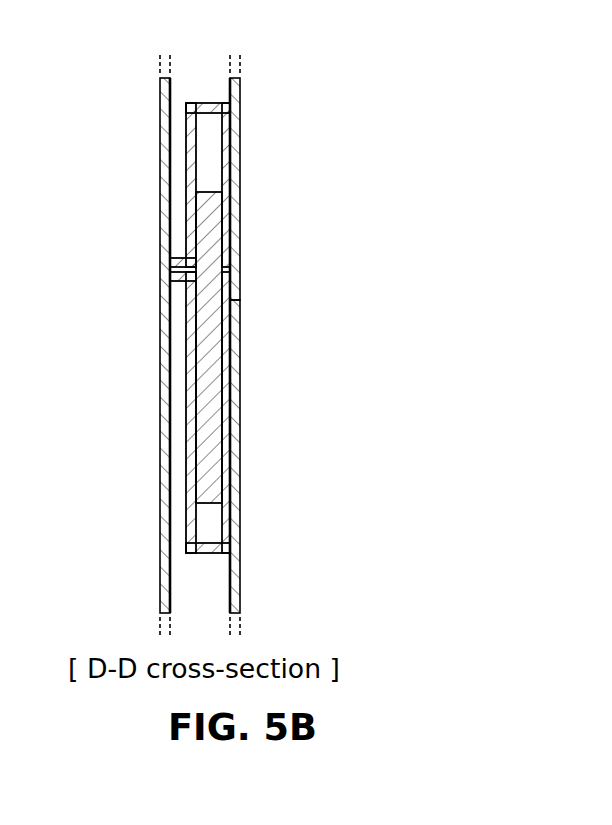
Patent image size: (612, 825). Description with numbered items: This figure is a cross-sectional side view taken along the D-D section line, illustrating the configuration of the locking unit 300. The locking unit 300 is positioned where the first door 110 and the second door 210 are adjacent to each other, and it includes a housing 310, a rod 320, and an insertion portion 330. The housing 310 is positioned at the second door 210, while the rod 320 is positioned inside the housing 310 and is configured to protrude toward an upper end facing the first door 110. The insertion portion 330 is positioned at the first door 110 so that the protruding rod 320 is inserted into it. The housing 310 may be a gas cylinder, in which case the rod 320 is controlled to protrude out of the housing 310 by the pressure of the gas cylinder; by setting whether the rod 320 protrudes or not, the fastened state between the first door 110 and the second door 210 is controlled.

The first door 110 is at (237, 92).
The second door 210 is at (235, 524).
The locking unit 300 is at (282, 328).
The housing 310 is at (227, 380).
The rod 320 is at (221, 254).
The insertion portion 330 is at (227, 140).